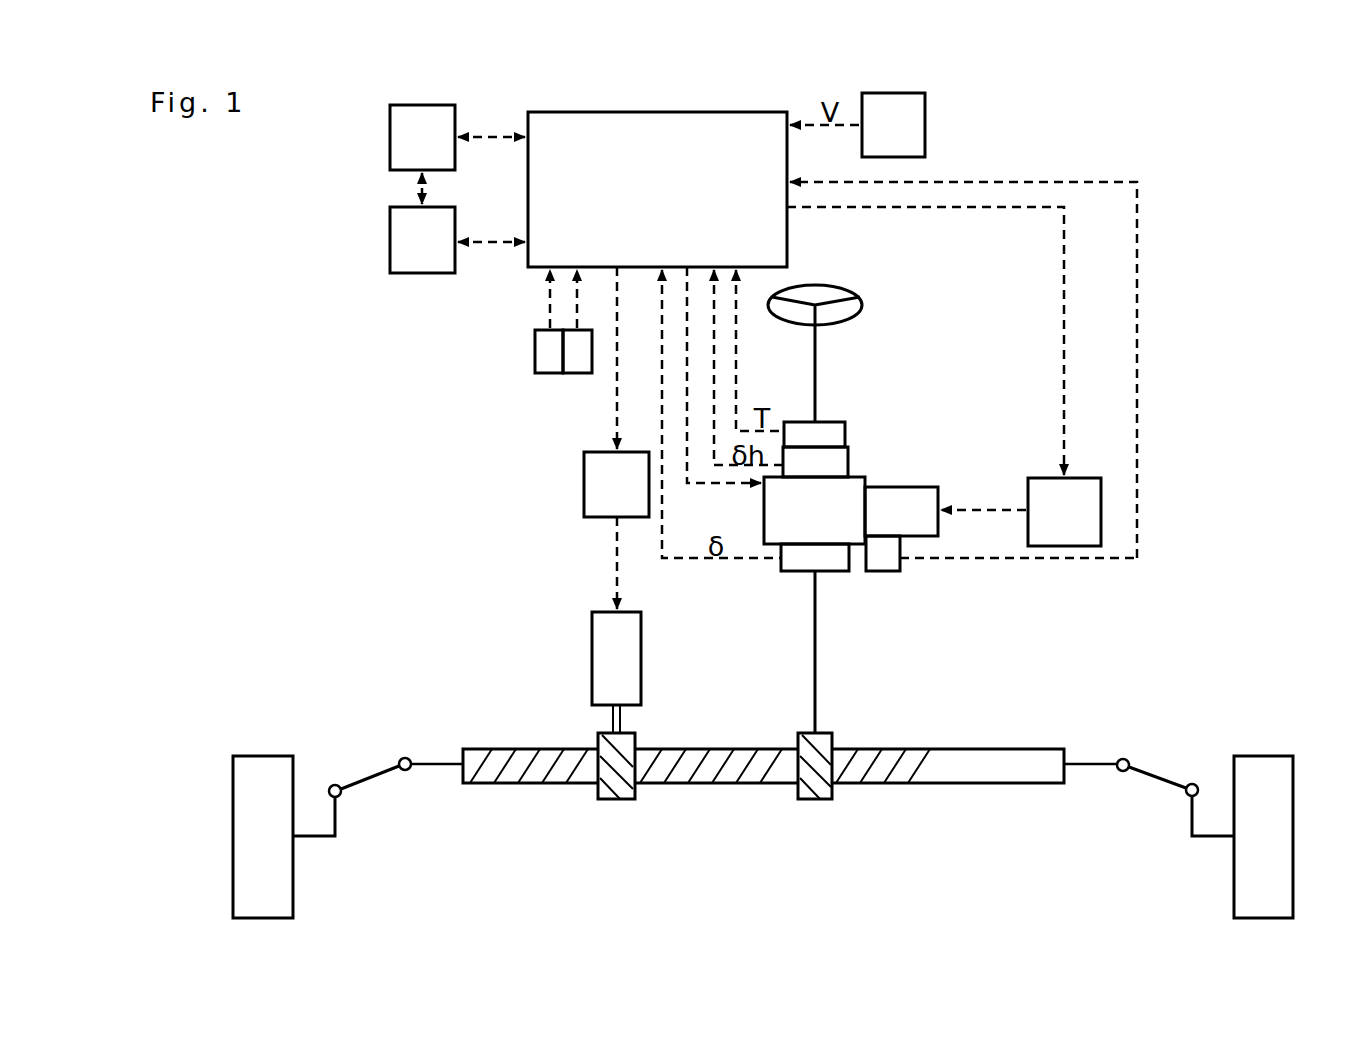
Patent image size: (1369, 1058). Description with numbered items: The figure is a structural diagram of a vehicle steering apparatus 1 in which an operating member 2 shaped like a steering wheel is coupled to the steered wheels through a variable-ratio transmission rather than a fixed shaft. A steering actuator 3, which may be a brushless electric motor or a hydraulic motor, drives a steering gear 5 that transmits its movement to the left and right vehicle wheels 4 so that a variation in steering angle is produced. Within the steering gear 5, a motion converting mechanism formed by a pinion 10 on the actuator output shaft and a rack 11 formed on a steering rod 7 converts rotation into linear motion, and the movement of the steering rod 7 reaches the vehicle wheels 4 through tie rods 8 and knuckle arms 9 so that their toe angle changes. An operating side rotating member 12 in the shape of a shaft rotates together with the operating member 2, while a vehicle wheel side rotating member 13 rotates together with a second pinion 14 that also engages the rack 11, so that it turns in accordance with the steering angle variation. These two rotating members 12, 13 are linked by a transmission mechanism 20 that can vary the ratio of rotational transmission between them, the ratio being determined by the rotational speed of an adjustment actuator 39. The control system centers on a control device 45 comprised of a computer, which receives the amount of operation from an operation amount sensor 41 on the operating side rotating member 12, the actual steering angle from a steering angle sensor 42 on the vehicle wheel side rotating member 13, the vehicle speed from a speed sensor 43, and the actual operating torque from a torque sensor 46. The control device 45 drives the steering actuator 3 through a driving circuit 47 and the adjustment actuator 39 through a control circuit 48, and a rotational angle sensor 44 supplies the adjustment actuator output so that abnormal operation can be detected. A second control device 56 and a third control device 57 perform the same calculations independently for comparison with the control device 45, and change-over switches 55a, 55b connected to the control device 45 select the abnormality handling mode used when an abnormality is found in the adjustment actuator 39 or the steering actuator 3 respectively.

The vehicle steering apparatus 1 is at (590, 628).
The operating member 2 is at (835, 288).
The steering actuator 3 is at (598, 672).
The vehicle wheels 4 is at (258, 872).
The steering gear 5 is at (528, 785).
The steering rod 7 is at (972, 785).
The tie rods 8 is at (363, 775).
The knuckle arms 9 is at (316, 842).
The pinion 10 is at (613, 801).
The rack 11 is at (704, 785).
The operating side rotating member 12 is at (818, 372).
The vehicle wheel side rotating member 13 is at (818, 645).
The pinion 14 is at (813, 801).
The transmission mechanism 20 is at (760, 508).
The adjustment actuator 39 is at (925, 496).
The operation amount sensor 41 is at (840, 466).
The steering angle sensor 42 is at (794, 566).
The speed sensor 43 is at (916, 118).
The rotational angle sensor 44 is at (895, 573).
The control device 45 is at (703, 128).
The torque sensor 46 is at (840, 432).
The driving circuit 47 is at (590, 478).
The control circuit 48 is at (1088, 488).
The change-over switch 55a is at (533, 348).
The change-over switch 55b is at (582, 372).
The second control device 56 is at (398, 238).
The third control device 57 is at (398, 135).